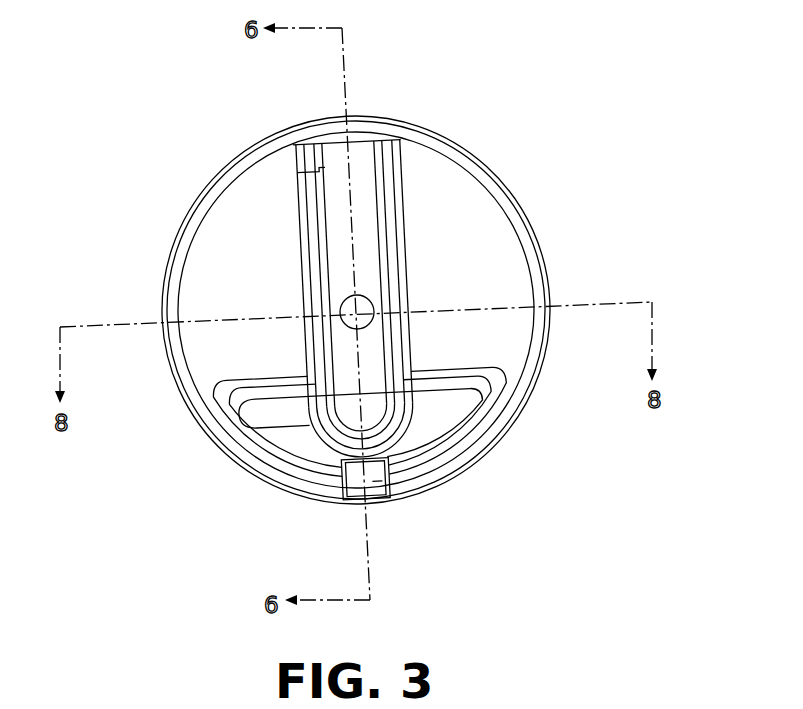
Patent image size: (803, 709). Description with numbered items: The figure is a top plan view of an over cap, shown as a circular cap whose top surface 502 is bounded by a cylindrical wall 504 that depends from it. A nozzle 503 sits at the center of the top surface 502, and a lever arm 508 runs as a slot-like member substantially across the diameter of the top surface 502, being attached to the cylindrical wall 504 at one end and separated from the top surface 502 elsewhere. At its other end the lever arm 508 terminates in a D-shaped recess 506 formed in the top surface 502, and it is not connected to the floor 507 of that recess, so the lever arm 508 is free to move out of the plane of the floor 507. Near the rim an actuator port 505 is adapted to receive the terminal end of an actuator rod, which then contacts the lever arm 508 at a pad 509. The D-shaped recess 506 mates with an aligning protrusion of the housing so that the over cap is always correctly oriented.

The top surface 502 is at (500, 285).
The nozzle 503 is at (338, 322).
The cylindrical wall 504 is at (468, 162).
The actuator port 505 is at (407, 493).
The D-shaped recess 506 is at (458, 408).
The floor 507 is at (306, 427).
The lever arm 508 is at (328, 172).
The pad 509 is at (332, 455).